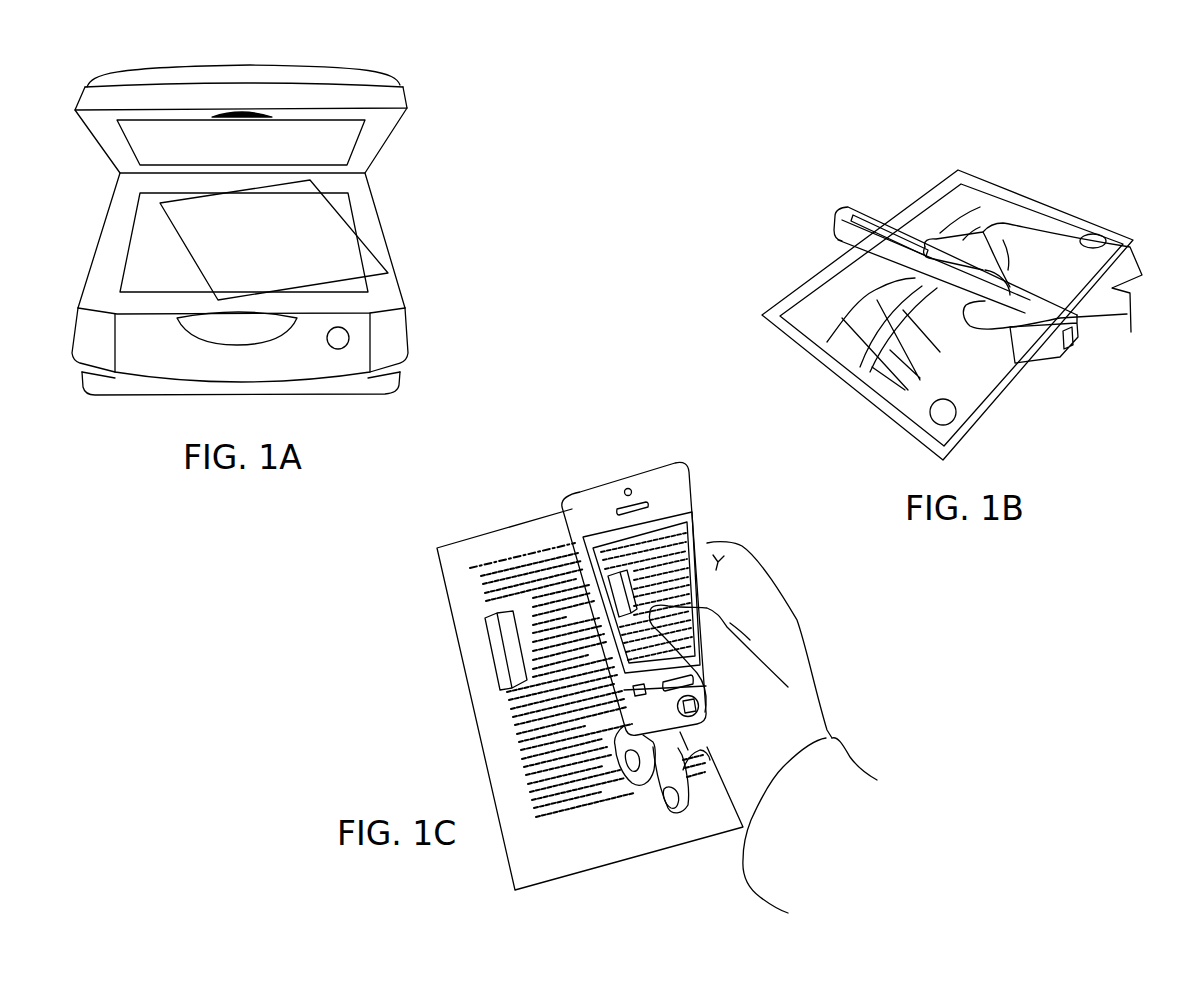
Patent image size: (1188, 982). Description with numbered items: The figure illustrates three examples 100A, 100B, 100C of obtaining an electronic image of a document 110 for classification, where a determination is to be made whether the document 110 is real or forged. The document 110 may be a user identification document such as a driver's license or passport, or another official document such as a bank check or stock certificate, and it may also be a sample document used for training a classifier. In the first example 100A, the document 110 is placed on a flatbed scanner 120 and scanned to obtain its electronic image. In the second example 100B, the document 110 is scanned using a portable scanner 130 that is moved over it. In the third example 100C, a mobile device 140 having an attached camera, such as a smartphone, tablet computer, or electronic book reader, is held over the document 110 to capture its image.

In FIG. 1A, the flatbed scanner system 100A is at (300, 236).
In FIG. 1B, the handheld wand scanner system 100B is at (904, 301).
In FIG. 1C, the mobile device capture system 100C is at (605, 670).
In FIG. 1A, the document 110 is at (363, 262).
In FIG. 1B, the document 110 is at (852, 350).
In FIG. 1C, the document 110 is at (513, 715).
In FIG. 1A, the flatbed scanner 120 is at (400, 357).
In FIG. 1B, the portable scanner 130 is at (850, 212).
In FIG. 1C, the mobile device 140 is at (693, 475).